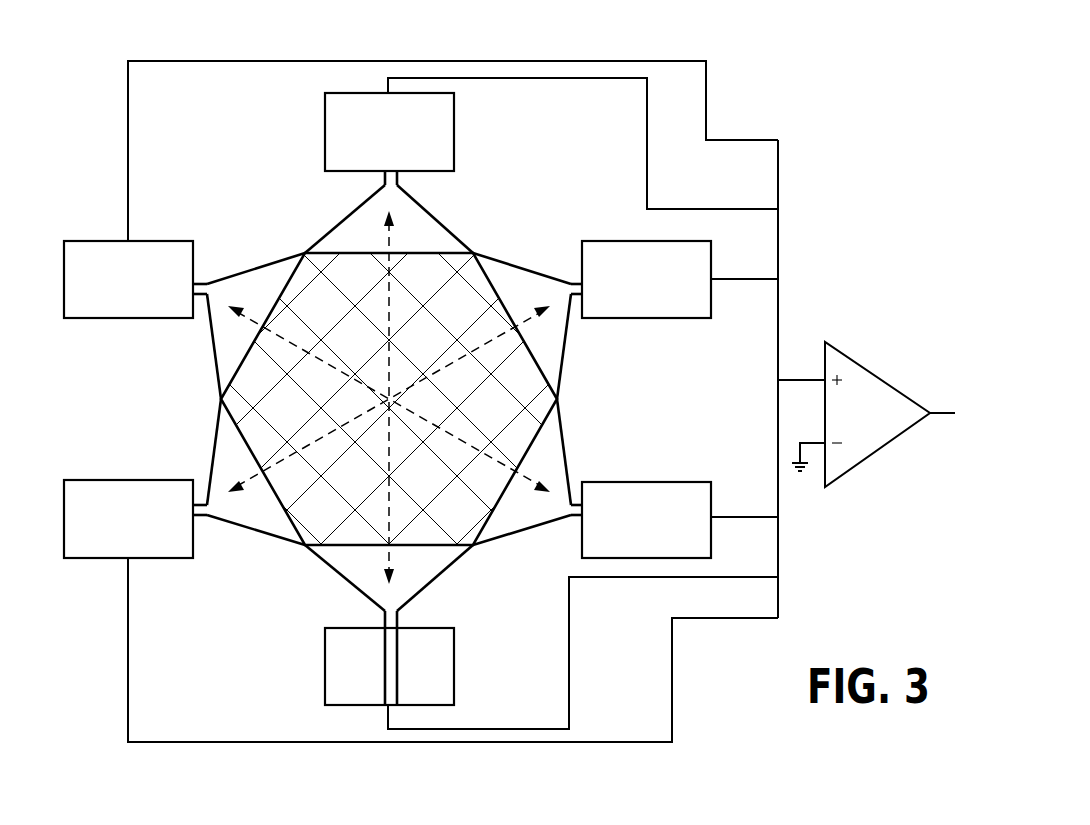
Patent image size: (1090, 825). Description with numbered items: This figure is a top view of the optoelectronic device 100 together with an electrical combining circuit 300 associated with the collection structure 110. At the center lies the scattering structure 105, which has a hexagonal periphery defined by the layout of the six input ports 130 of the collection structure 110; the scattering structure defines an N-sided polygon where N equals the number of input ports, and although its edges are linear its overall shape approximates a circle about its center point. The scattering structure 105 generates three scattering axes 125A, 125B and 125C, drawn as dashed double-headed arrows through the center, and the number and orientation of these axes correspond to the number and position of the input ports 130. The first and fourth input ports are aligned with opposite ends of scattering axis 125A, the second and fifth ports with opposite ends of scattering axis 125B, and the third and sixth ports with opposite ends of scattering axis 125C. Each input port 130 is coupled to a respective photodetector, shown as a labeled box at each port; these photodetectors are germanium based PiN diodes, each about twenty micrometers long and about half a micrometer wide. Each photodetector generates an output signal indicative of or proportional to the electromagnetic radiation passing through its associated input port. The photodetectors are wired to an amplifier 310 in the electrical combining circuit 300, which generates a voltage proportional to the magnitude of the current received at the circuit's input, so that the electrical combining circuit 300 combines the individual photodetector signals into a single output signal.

The optoelectronic device 100 is at (849, 93).
The scattering structure 105 is at (320, 528).
The collection structure 110 is at (265, 251).
The scattering axis 125A is at (389, 275).
The scattering axis 125B is at (456, 361).
The scattering axis 125C is at (472, 448).
The input ports 130 is at (300, 209).
The electrical combining circuit 300 is at (844, 280).
The amplifier 310 is at (875, 372).